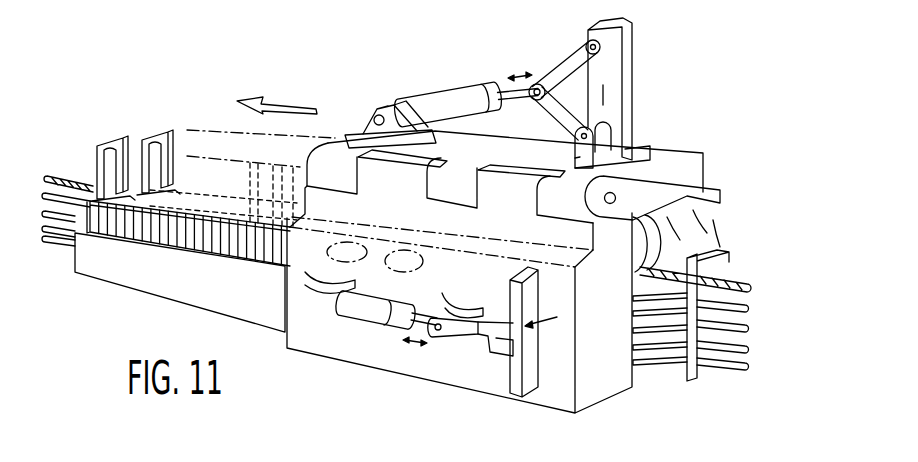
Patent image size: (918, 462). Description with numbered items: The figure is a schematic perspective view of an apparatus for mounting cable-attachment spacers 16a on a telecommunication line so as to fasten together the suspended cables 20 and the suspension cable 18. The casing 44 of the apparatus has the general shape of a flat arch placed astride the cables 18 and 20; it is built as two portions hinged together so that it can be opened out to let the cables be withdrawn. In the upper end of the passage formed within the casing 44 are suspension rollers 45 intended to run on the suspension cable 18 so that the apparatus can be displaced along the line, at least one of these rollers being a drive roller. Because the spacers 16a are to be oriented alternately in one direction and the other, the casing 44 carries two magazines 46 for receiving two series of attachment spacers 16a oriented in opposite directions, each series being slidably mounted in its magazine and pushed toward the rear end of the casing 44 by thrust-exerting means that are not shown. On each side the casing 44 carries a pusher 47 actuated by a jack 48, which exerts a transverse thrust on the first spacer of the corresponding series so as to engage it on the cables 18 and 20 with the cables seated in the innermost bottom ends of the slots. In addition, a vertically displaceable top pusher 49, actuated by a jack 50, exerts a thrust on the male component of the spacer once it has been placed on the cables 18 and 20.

The cable-attachment spacers 16a is at (189, 128).
The magazines 46 is at (90, 268).
The jack 50 is at (433, 98).
The top pusher 49 is at (612, 150).
The casing 44 is at (683, 152).
The suspension rollers 45 is at (690, 194).
The suspension cable 18 is at (747, 258).
The suspended cables 20 is at (720, 327).
The pusher 47 is at (525, 388).
The jack 48 is at (367, 312).